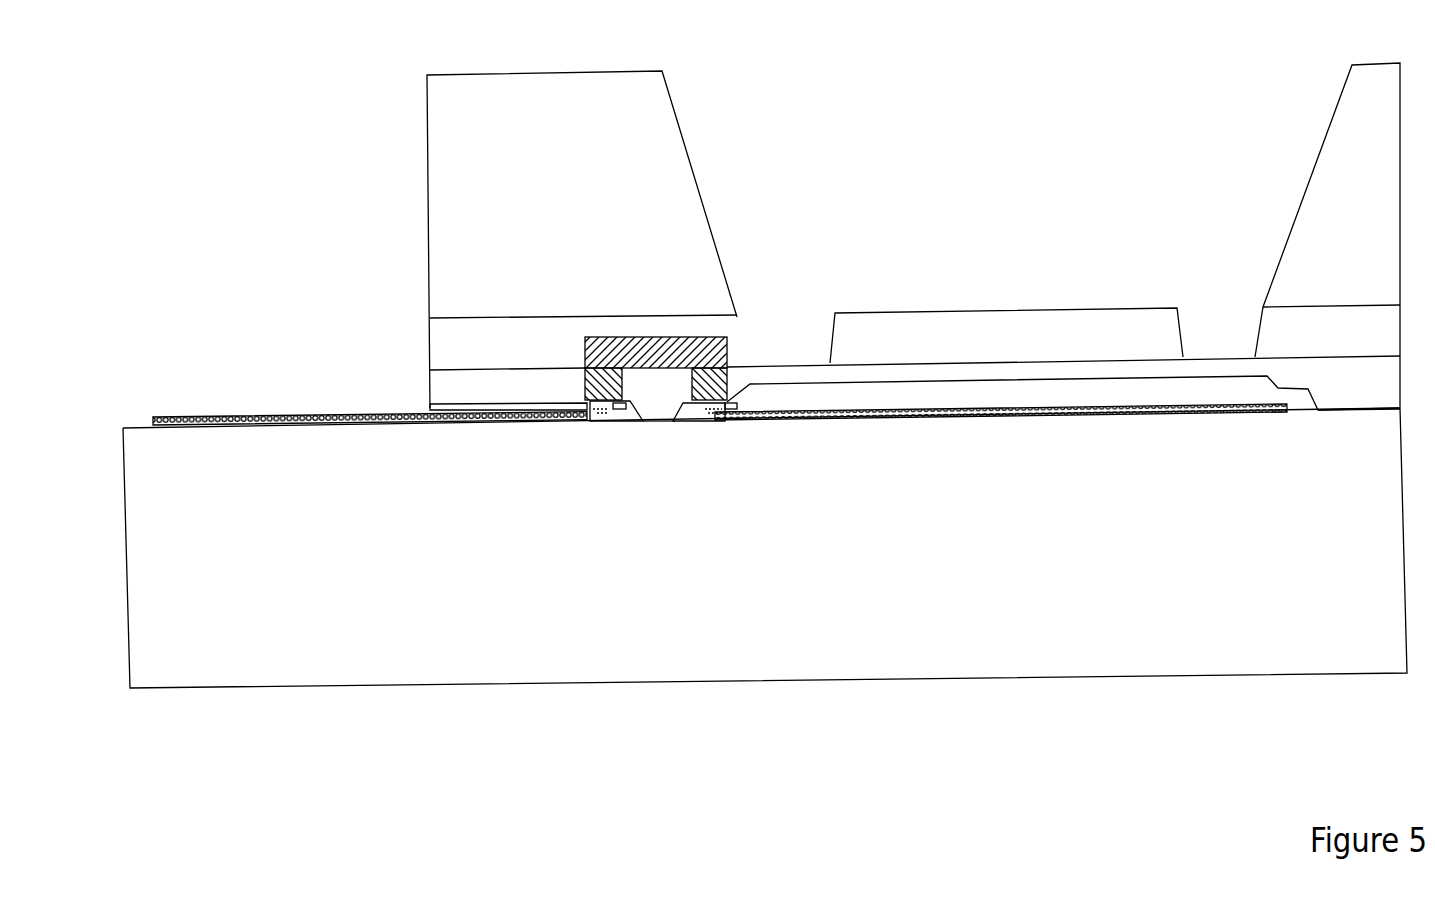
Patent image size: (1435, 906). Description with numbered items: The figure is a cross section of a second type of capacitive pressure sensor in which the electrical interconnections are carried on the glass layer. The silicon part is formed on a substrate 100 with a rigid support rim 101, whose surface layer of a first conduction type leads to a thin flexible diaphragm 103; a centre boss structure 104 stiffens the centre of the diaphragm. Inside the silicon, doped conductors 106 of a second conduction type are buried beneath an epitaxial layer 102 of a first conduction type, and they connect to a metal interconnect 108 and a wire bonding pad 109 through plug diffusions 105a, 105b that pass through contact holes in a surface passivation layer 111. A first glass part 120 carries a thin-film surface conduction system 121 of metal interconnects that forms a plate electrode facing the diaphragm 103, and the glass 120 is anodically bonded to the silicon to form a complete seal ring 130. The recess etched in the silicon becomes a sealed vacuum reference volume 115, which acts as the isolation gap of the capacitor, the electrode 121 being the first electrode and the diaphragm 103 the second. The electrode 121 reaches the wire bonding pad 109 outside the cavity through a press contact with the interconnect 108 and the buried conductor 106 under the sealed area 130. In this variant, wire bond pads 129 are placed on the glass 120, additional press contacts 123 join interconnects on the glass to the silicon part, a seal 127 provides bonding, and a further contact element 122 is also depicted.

The substrate 100 is at (467, 132).
The rigid support rim 101 is at (448, 345).
The epitaxial layer 102 is at (1340, 373).
The thin flexible diaphragm 103 is at (792, 372).
The centre boss structure 104 is at (937, 328).
The plug diffusion 105a is at (727, 337).
The plug diffusion 105b is at (593, 337).
The doped conductors 106 is at (650, 337).
The metal interconnect 108 is at (697, 410).
The wire bonding pad 109 is at (607, 425).
The surface passivation layer 111 is at (458, 402).
The sealed vacuum reference volume 115 is at (1023, 400).
The first glass part 120 is at (345, 662).
The thin-film surface conduction system 121 is at (921, 420).
The right bump 122 is at (733, 410).
The additional press contacts 123 is at (565, 425).
The seal 127 is at (1147, 420).
The wire bond pads 129 is at (247, 417).
The seal ring 130 is at (650, 423).